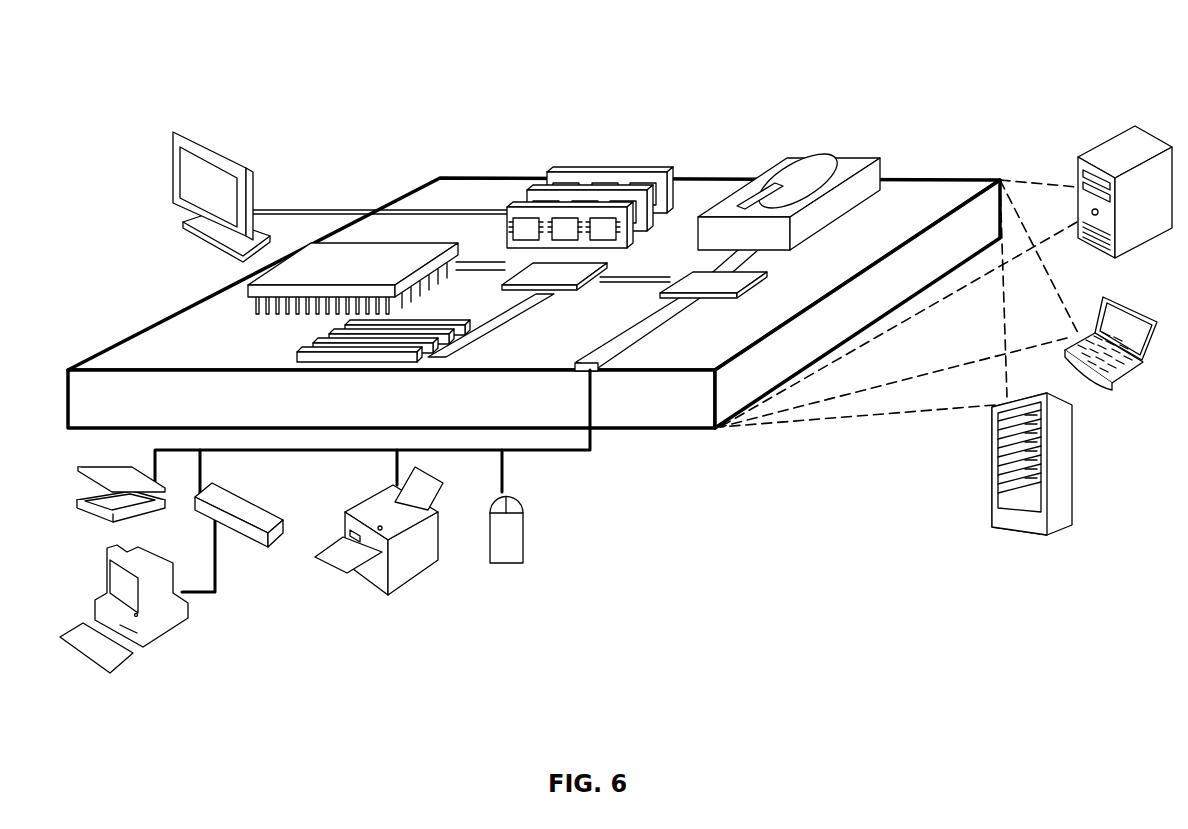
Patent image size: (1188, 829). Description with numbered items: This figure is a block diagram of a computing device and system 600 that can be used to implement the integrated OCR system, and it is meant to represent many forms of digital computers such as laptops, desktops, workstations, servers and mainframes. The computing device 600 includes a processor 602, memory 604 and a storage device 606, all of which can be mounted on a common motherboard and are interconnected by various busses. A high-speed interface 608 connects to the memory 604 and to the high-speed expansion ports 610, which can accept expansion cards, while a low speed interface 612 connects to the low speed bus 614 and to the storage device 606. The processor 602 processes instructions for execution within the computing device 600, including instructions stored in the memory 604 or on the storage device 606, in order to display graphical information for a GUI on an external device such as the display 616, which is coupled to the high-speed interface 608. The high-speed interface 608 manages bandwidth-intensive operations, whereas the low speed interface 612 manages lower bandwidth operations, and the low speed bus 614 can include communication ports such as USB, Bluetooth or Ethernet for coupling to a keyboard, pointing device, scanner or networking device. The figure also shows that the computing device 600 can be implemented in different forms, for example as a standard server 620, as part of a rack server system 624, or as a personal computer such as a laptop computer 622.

The computing device 600 is at (362, 62).
The processor 602 is at (248, 290).
The memory 604 is at (565, 173).
The storage device 606 is at (780, 157).
The high-speed interface 608 is at (533, 272).
The high-speed expansion ports 610 is at (317, 340).
The low speed interface 612 is at (710, 283).
The low speed bus 614 is at (598, 370).
The display 616 is at (169, 135).
The standard server 620 is at (1072, 163).
The laptop computer 622 is at (1102, 297).
The rack server system 624 is at (990, 485).